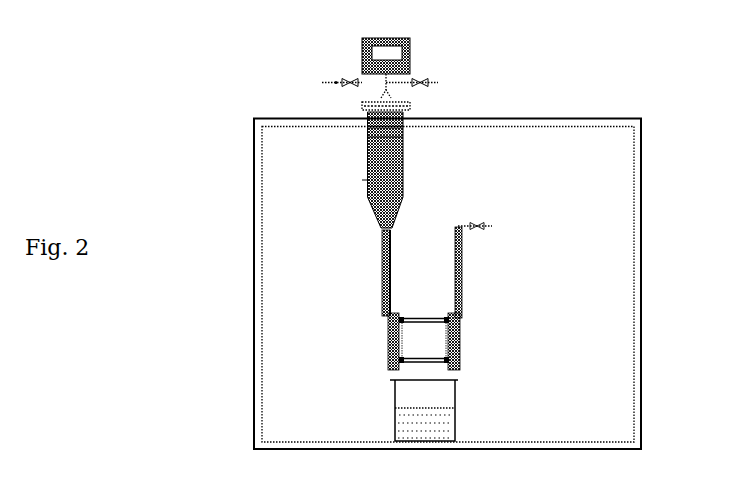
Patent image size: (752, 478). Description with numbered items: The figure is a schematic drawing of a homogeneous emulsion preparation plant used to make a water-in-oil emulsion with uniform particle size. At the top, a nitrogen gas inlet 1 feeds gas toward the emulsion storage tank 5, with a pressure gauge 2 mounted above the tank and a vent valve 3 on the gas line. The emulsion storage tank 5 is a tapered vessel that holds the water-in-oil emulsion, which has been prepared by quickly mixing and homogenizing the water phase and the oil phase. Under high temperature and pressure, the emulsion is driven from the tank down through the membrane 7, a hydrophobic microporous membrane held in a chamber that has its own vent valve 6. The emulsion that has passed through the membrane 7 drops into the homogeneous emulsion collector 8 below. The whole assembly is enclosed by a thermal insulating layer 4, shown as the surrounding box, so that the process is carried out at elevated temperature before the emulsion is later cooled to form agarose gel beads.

The nitrogen gas inlet 1 is at (329, 84).
The pressure gauge 2 is at (386, 57).
The vent valve 3 is at (438, 84).
The thermal insulating layer 4 is at (568, 123).
The emulsion storage tank 5 is at (403, 169).
The vent valve 6 is at (475, 260).
The membrane 7 is at (450, 342).
The homogeneous emulsion collector 8 is at (447, 422).